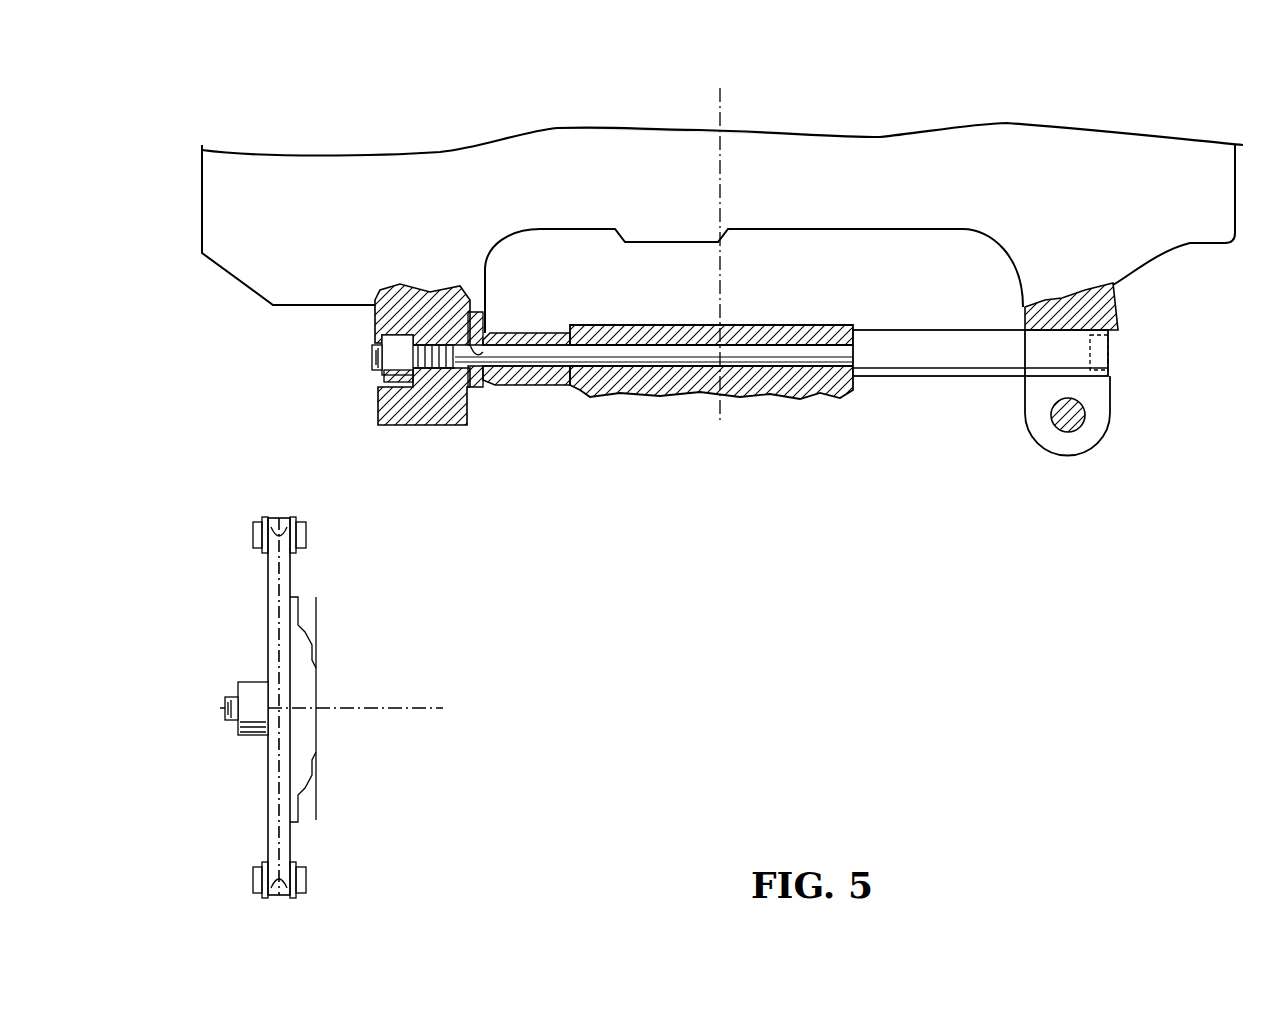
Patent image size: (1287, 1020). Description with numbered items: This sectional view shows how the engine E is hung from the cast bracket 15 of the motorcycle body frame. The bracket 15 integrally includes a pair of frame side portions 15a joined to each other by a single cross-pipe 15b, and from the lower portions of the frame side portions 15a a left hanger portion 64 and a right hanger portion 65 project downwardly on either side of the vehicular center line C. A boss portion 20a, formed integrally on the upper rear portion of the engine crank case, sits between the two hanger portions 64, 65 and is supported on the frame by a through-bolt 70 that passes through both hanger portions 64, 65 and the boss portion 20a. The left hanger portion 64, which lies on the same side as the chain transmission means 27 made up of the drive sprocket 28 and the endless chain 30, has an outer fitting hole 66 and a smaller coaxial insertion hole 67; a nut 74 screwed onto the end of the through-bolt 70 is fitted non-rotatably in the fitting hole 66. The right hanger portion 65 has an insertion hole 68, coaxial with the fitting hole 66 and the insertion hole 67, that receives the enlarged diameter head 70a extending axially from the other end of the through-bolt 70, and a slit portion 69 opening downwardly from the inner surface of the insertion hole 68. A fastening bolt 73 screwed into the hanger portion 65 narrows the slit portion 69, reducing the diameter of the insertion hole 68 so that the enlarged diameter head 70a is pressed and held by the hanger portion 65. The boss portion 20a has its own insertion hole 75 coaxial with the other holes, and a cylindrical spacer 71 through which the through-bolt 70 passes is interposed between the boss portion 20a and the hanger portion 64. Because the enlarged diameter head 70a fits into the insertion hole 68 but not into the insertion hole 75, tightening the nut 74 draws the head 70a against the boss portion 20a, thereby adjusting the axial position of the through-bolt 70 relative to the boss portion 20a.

The bracket 15 is at (1040, 120).
The frame side portions 15a is at (242, 275).
The cross-pipe 15b is at (890, 147).
The boss portion 20a is at (698, 330).
The chain transmission means 27 is at (258, 587).
The drive sprocket 28 is at (268, 672).
The endless chain 30 is at (268, 512).
The hanger portion 64 is at (425, 430).
The hanger portion 65 is at (1110, 402).
The fitting hole 66 is at (375, 300).
The insertion hole 67 is at (478, 310).
The insertion hole 68 is at (1115, 328).
The slit portion 69 is at (1062, 443).
The through-bolt 70 is at (758, 353).
The enlarged diameter head 70a is at (1015, 360).
The cylindrical spacer 71 is at (540, 382).
The fastening bolt 73 is at (1072, 423).
The nut 74 is at (395, 360).
The insertion hole 75 is at (753, 333).
The vehicular center line C is at (736, 100).
The engine E is at (825, 315).